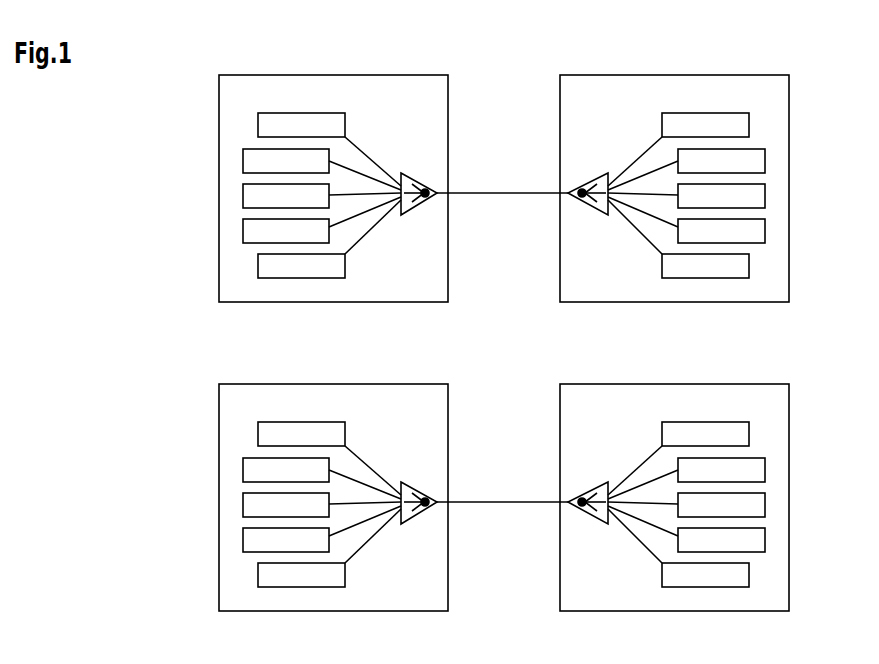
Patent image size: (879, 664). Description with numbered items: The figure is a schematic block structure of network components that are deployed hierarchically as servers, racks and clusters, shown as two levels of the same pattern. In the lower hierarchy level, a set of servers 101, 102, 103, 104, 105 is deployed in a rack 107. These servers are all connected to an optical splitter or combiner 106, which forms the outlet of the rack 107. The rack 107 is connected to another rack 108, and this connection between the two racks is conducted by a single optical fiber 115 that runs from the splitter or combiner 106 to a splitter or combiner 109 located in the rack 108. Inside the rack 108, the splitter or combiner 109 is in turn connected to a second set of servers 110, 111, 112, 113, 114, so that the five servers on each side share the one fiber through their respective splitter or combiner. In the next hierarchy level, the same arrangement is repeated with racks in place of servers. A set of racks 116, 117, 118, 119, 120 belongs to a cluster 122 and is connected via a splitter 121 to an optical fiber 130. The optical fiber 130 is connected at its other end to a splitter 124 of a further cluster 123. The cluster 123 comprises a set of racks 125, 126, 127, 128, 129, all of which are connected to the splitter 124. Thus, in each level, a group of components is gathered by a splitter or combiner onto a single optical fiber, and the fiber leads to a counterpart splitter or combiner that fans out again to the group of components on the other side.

The server 101 is at (258, 126).
The server 102 is at (243, 161).
The server 103 is at (243, 195).
The server 104 is at (243, 230).
The server 105 is at (258, 267).
The optical splitter or combiner 106 is at (430, 186).
The rack 107 is at (432, 288).
The rack 108 is at (573, 259).
The splitter or combiner 109 is at (578, 188).
The server 110 is at (749, 122).
The server 111 is at (765, 159).
The server 112 is at (765, 195).
The server 113 is at (765, 230).
The server 114 is at (749, 266).
The optical fiber 115 is at (508, 194).
The rack 116 is at (282, 449).
The rack 117 is at (273, 471).
The rack 118 is at (273, 497).
The rack 119 is at (273, 529).
The rack 120 is at (282, 548).
The splitter 121 is at (442, 483).
The cluster 122 is at (367, 504).
The cluster 123 is at (643, 497).
The splitter 124 is at (568, 483).
The rack 125 is at (730, 448).
The rack 126 is at (738, 469).
The rack 127 is at (738, 496).
The rack 128 is at (738, 529).
The rack 129 is at (730, 548).
The optical fiber 130 is at (502, 530).